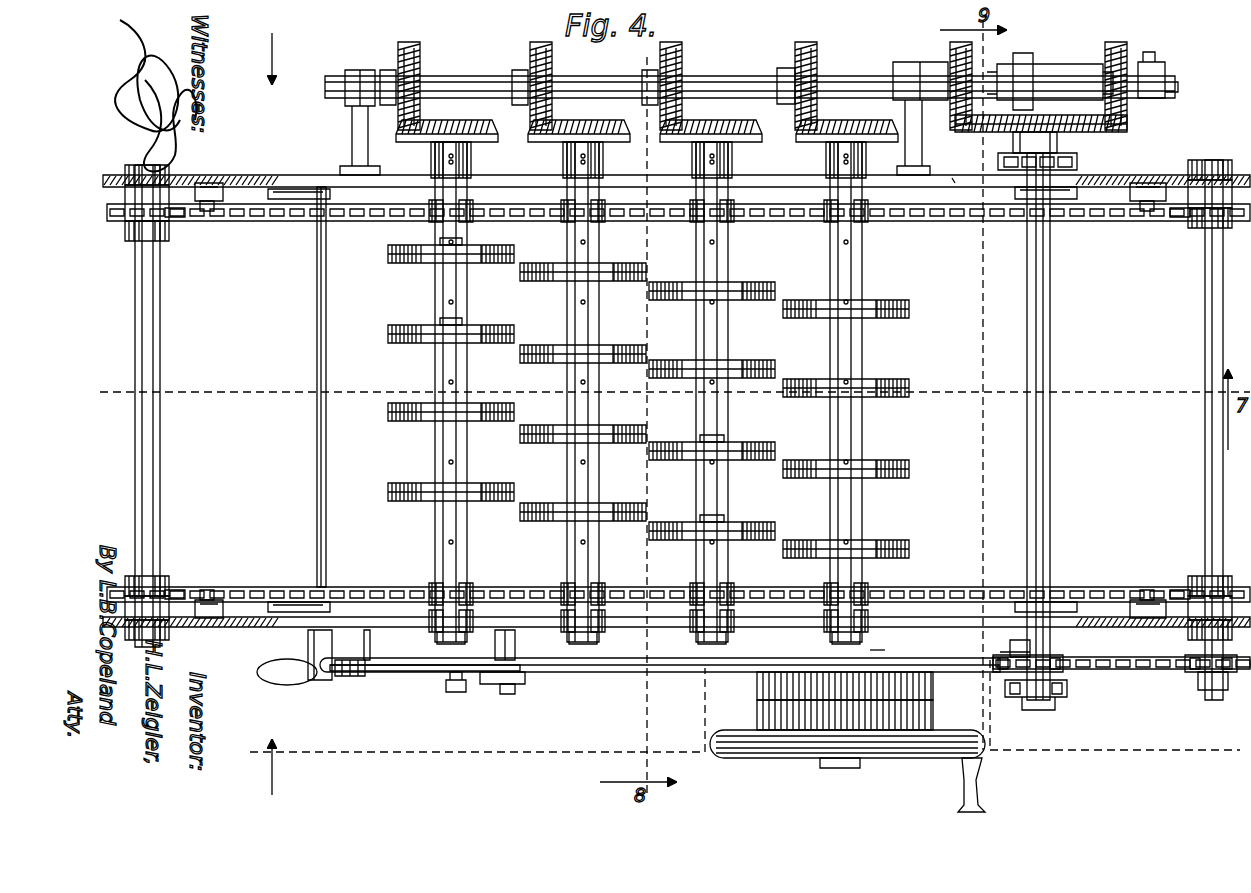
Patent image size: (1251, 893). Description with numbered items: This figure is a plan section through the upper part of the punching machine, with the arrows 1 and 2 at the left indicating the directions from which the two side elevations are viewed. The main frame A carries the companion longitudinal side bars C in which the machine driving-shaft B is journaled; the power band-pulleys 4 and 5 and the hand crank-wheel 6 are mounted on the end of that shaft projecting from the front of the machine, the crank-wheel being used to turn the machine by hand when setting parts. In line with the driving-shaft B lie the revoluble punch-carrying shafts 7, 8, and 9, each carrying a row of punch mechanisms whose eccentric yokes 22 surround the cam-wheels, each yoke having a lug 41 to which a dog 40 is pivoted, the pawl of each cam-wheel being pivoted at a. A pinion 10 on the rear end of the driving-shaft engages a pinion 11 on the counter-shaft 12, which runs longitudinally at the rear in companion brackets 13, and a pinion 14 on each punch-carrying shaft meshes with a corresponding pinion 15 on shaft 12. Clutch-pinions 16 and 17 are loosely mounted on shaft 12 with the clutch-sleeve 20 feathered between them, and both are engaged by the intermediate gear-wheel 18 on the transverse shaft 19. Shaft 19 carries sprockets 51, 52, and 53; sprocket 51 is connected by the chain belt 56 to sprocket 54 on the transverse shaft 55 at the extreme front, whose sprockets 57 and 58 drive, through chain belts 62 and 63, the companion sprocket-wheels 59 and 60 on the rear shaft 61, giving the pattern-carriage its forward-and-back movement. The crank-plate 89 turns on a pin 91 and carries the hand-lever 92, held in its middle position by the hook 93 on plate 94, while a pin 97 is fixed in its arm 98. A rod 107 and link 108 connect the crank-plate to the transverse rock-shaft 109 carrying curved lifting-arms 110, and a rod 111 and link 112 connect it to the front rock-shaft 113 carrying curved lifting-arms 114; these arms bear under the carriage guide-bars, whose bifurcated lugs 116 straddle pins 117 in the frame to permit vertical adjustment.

The power band-pulley 4 is at (757, 688).
The power band-pulley 5 is at (757, 713).
The hand crank-wheel 6 is at (722, 754).
The punch-carrying shaft 7 is at (728, 641).
The punch-carrying shaft 8 is at (591, 548).
The punch-carrying shaft 9 is at (459, 545).
The pinion 10 is at (850, 126).
The pinion 11 is at (814, 52).
The counter-shaft 12 is at (845, 80).
The bracket 13 is at (360, 76).
The pinion 14 is at (460, 126).
The pinion 15 is at (421, 70).
The clutch-pinion 16 is at (950, 60).
The clutch-pinion 17 is at (1127, 56).
The intermediate gear-wheel 18 is at (1072, 124).
The transverse shaft 19 is at (1027, 290).
The clutch-sleeve 20 is at (1048, 84).
The eccentric yoke 22 is at (505, 325).
The dog 40 is at (407, 265).
The lug 41 is at (445, 262).
The sprocket 51 is at (1068, 672).
The sprocket 52 is at (1065, 700).
The sprocket 53 is at (1072, 160).
The sprocket 54 is at (1195, 678).
The transverse shaft 55 is at (1205, 388).
The chain belt 56 is at (1145, 670).
The sprocket 57 is at (1180, 588).
The sprocket 58 is at (1178, 221).
The sprocket-wheel 59 is at (180, 588).
The sprocket-wheel 60 is at (176, 221).
The shaft 61 is at (135, 382).
The chain belt 62 is at (256, 587).
The chain belt 63 is at (258, 221).
The crank-plate 89 is at (497, 686).
The pin 91 is at (510, 696).
The hand-lever 92 is at (287, 685).
The hook 93 is at (353, 678).
The plate 94 is at (371, 642).
The pin 97 is at (456, 694).
The arm 98 is at (492, 698).
The rod 107 is at (415, 673).
The link 108 is at (318, 682).
The transverse rock-shaft 109 is at (317, 318).
The curved lifting-arm 110 is at (283, 189).
The rod 111 is at (613, 672).
The link 112 is at (1012, 647).
The transverse rock-shaft 113 is at (1050, 320).
The curved lifting-arm 114 is at (1015, 221).
The bifurcated lug 116 is at (207, 211).
The pin 117 is at (211, 183).
The arrow 1 is at (271, 778).
The arrow 2 is at (271, 46).
The pawl pivot a is at (462, 244).
The main frame A is at (790, 178).
The machine driving-shaft B is at (879, 648).
The longitudinal side bar C is at (957, 178).